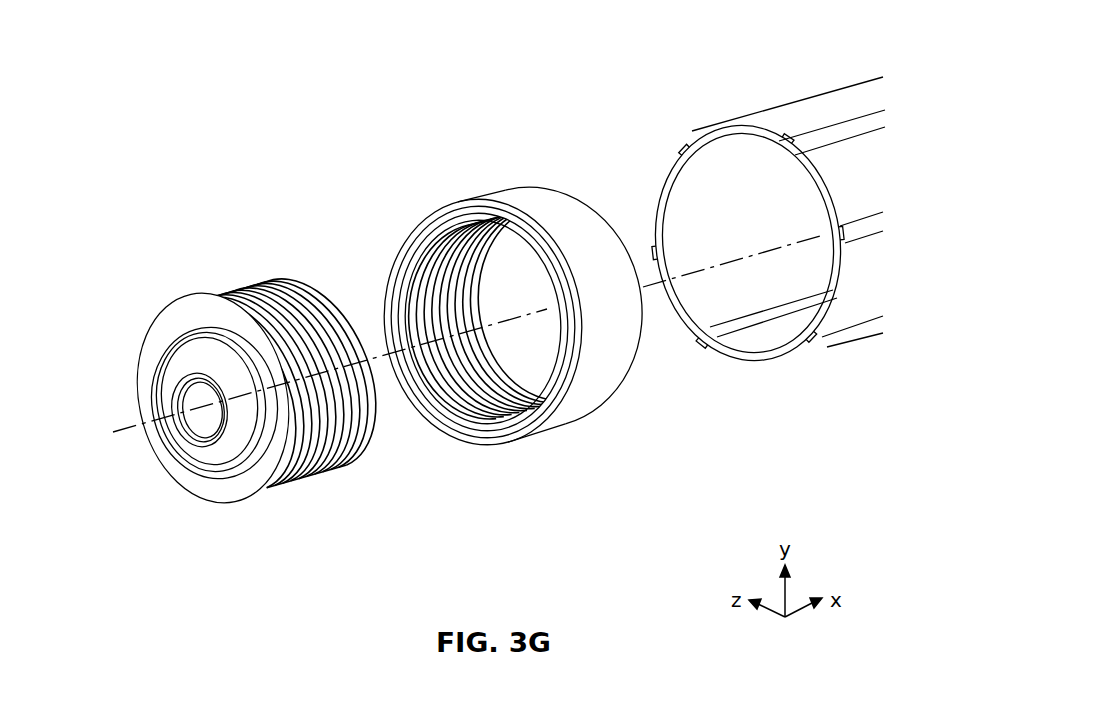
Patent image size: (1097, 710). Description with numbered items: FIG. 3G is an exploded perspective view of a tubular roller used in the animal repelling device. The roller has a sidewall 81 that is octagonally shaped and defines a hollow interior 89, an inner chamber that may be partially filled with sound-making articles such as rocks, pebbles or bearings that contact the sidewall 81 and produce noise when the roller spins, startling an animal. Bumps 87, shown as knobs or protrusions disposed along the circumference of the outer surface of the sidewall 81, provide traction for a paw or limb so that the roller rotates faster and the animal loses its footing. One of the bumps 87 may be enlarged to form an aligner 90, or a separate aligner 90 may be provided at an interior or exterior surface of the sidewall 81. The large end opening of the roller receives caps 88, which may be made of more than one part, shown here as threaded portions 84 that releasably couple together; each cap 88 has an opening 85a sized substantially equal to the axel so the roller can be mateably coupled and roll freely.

The sidewall 81 is at (682, 153).
The coupling nut 84 is at (427, 345).
The opening in cap 85a is at (205, 388).
The bumps 87 is at (844, 134).
The caps 88 is at (288, 277).
The hollow interior 89 is at (773, 333).
The aligner 90 is at (702, 340).